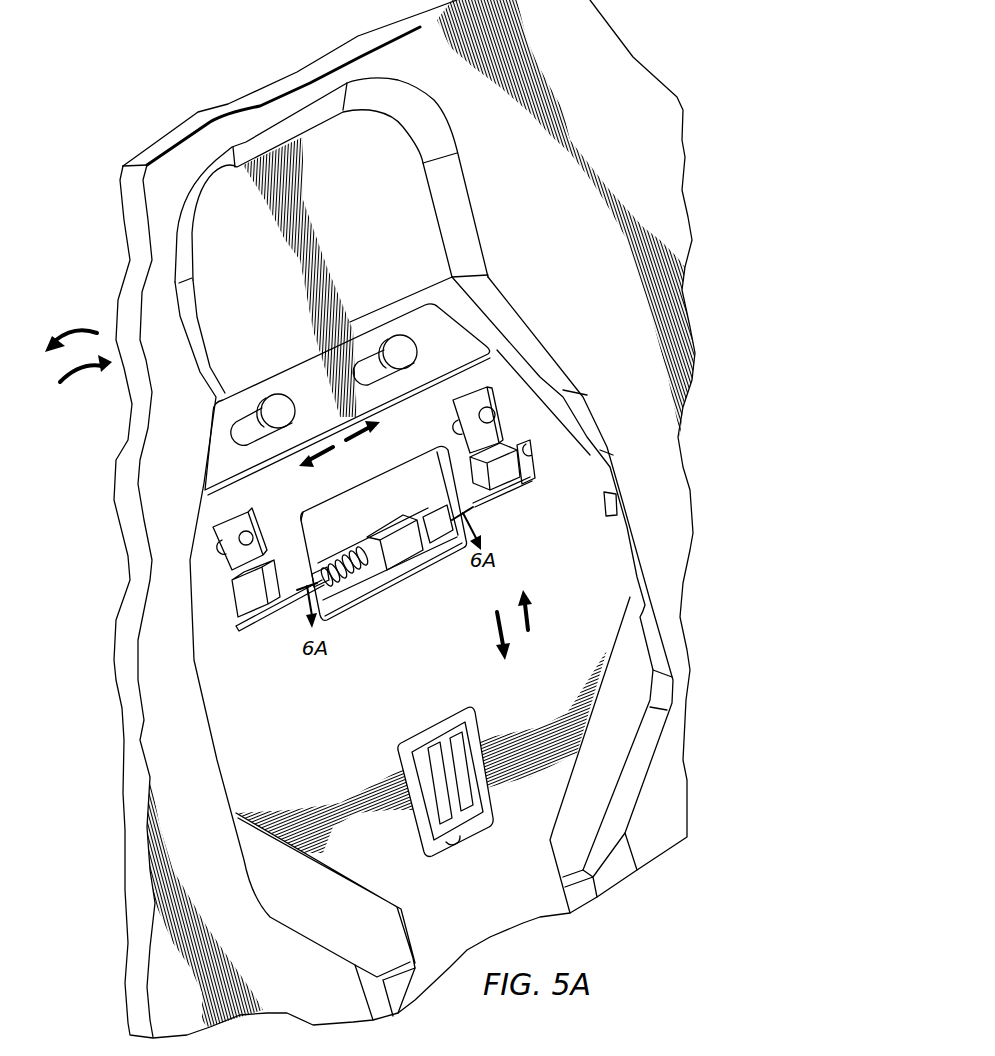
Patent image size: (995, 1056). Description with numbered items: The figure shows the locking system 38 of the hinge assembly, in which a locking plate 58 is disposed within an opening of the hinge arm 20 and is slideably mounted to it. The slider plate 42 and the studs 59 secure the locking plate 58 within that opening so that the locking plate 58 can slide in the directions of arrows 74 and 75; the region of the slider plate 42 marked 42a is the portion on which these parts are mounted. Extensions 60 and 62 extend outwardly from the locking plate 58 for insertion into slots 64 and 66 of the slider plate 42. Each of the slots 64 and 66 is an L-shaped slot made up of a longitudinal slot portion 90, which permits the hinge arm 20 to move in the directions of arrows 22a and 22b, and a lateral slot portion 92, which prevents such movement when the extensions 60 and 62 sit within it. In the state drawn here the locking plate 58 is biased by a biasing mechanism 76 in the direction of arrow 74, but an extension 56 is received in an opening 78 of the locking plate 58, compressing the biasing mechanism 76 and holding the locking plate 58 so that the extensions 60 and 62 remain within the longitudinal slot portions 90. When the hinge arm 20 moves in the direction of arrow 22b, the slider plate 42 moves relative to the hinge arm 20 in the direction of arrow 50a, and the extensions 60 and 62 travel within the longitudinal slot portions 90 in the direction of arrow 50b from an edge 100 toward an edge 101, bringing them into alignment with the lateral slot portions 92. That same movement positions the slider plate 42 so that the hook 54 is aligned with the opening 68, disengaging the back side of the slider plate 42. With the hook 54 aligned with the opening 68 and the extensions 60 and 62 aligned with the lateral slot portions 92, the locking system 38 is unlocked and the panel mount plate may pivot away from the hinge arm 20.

The hinge arm 20 is at (522, 233).
The arrow (direction of hinge arm movement) 22a is at (78, 332).
The arrow (direction of hinge arm movement) 22b is at (80, 378).
The locking system 38 is at (718, 475).
The slider plate 42 is at (461, 916).
The panel mounting portion 42a is at (383, 677).
The arrow (direction of slider plate movement) 50a is at (534, 615).
The arrow (direction of extension movement) 50b is at (497, 622).
The hook 54 is at (441, 742).
The extension 56 is at (456, 546).
The locking plate 58 is at (300, 388).
The studs 59 is at (291, 416).
The extension 60 is at (244, 610).
The extension 62 is at (520, 470).
The slot 64 is at (230, 572).
The slot 66 is at (459, 438).
The opening 68 is at (459, 844).
The arrow (direction of locking plate movement) 74 is at (360, 434).
The arrow (direction of locking plate movement) 75 is at (324, 446).
The biasing mechanism 76 is at (342, 578).
The opening 78 is at (445, 506).
The longitudinal slot portion 90 is at (248, 533).
The lateral slot portion 92 is at (534, 456).
The edge 100 is at (240, 515).
The edge 101 is at (264, 630).